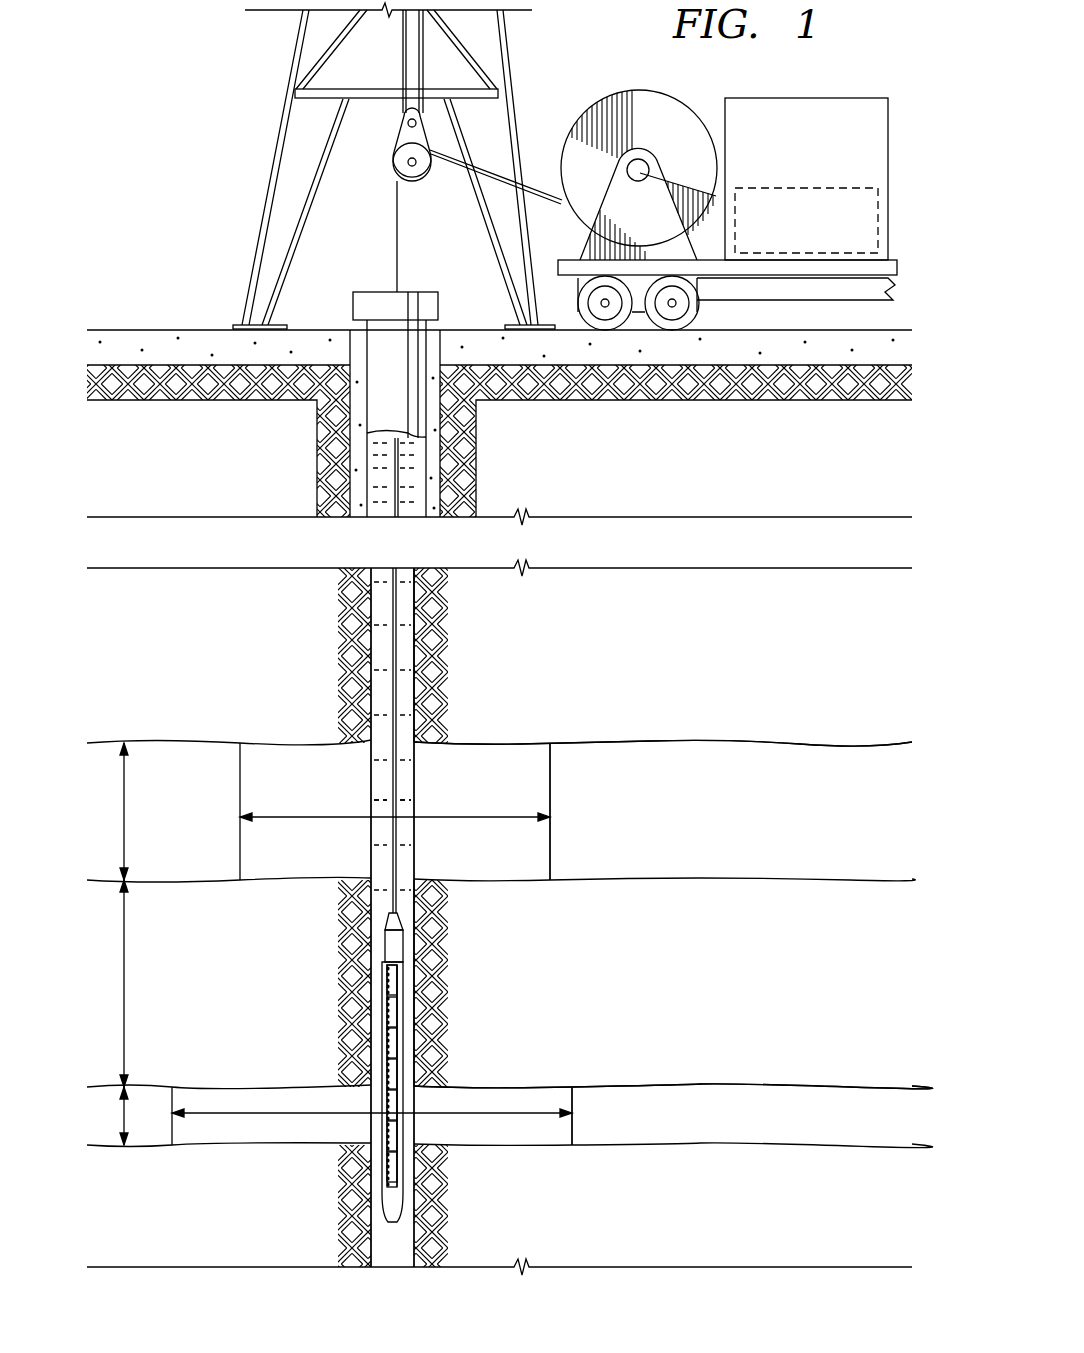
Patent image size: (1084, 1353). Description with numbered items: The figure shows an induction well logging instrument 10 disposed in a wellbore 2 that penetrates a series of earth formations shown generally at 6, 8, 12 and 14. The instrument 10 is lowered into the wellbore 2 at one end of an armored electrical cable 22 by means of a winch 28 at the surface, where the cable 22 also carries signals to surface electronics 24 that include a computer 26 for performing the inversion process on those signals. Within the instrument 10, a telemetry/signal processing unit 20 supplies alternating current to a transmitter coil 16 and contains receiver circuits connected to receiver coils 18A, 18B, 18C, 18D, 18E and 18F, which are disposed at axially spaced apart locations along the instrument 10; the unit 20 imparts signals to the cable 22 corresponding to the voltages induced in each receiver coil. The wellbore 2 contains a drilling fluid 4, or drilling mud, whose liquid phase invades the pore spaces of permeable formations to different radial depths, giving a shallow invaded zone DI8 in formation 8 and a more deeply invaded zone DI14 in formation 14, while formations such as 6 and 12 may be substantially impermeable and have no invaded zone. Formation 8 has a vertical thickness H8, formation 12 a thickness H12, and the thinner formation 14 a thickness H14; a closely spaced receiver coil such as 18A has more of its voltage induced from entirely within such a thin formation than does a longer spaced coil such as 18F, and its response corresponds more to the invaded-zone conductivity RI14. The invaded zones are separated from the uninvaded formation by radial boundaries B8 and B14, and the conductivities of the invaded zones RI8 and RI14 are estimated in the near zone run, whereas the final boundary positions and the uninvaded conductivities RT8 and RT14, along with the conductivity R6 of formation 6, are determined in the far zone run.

The wellbore 2 is at (382, 703).
The fluid 4 is at (383, 797).
The earth formation 6 is at (555, 658).
The earth formation 8 is at (633, 743).
The induction well logging instrument 10 is at (364, 945).
The earth formation 12 is at (660, 972).
The earth formation 14 is at (628, 1097).
The transmitter coil 16 is at (388, 977).
The receiver coil 18A is at (388, 1007).
The receiver coil 18B is at (388, 1037).
The receiver coil 18C is at (388, 1068).
The receiver coil 18D is at (388, 1100).
The receiver coil 18E is at (388, 1130).
The receiver coil 18F is at (388, 1162).
The telemetry/signal processing unit 20 is at (386, 940).
The armored electrical cable 22 is at (393, 657).
The surface electronics 24 is at (826, 98).
The computer 26 is at (803, 188).
The winch 28 is at (631, 90).
The conductivity of formation 6 R6 is at (732, 660).
The conductivity of zone not subject to invasion RT8 is at (744, 820).
The conductivity of zone subject to invasion RI8 is at (314, 857).
The invaded zone DI8 is at (463, 817).
The radial boundary B8 is at (548, 847).
The vertical thickness H8 is at (123, 816).
The vertical thickness H12 is at (123, 980).
The vertical thickness H14 is at (123, 1113).
The conductivity of zone not subject to invasion RT14 is at (752, 1122).
The conductivity of zone subject to invasion RI14 is at (254, 1142).
The invaded zone DI14 is at (264, 1113).
The radial boundary B14 is at (572, 1127).